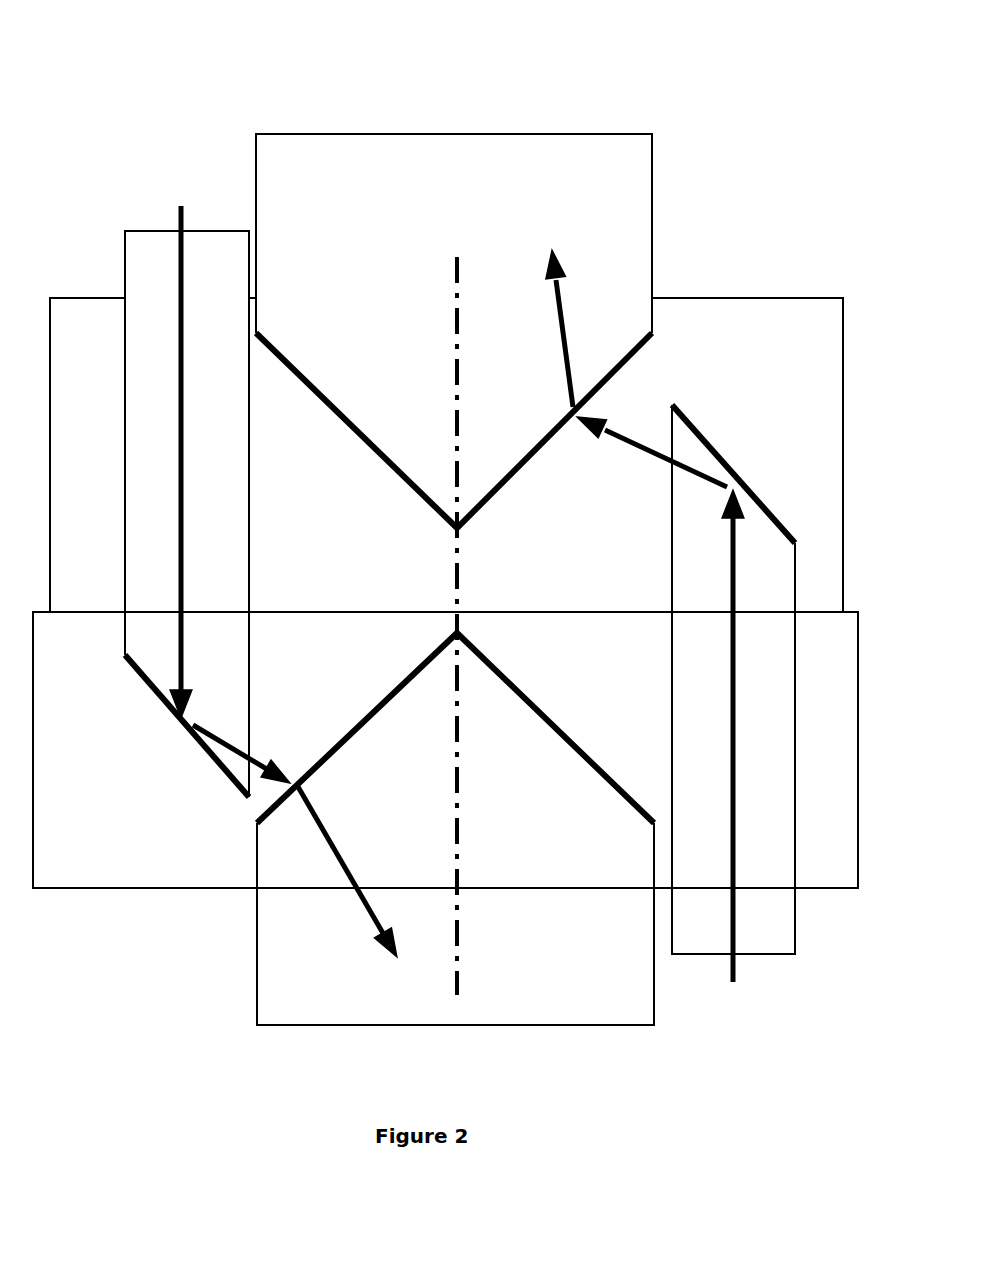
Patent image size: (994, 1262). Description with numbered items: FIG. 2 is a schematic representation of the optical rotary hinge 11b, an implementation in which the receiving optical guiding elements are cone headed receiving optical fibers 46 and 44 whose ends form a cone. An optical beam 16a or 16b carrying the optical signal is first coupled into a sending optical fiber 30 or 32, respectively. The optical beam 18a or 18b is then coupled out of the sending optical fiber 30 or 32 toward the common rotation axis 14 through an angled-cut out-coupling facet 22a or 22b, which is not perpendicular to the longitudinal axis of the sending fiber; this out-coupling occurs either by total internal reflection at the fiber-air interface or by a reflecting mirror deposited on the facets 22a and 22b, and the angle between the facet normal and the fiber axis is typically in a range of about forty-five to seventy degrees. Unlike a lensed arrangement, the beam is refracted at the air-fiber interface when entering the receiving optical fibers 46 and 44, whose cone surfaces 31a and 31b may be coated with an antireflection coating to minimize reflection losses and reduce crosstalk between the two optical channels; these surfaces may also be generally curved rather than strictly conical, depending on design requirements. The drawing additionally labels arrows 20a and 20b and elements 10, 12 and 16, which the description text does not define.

The housing 10 is at (725, 298).
The optical rotary hinge 11b is at (583, 93).
The base member 12 is at (173, 890).
The common rotation axis 14 is at (460, 940).
The upper prism block 16 is at (437, 132).
The optical beam 16a is at (178, 373).
The optical beam 16b is at (730, 622).
The optical beam 18a is at (250, 757).
The optical beam 18b is at (648, 457).
The first output beam 20a is at (355, 855).
The second output beam 20b is at (568, 375).
The angled-cut out-coupling facet 22a is at (215, 765).
The angled-cut out-coupling facet 22b is at (705, 440).
The sending optical fiber 30 is at (153, 230).
The cone surface 31a is at (390, 690).
The cone surface 31b is at (550, 445).
The sending optical fiber 32 is at (760, 957).
The receiving optical fiber 44 is at (655, 210).
The receiving optical fiber 46 is at (550, 1027).